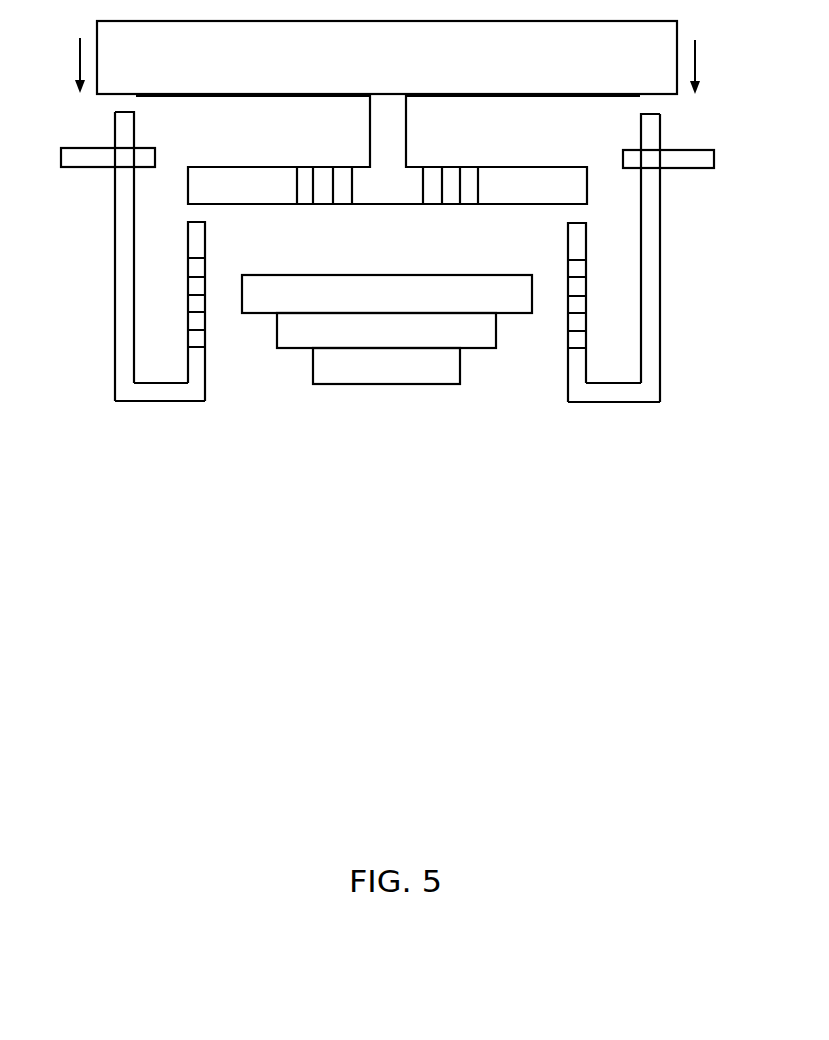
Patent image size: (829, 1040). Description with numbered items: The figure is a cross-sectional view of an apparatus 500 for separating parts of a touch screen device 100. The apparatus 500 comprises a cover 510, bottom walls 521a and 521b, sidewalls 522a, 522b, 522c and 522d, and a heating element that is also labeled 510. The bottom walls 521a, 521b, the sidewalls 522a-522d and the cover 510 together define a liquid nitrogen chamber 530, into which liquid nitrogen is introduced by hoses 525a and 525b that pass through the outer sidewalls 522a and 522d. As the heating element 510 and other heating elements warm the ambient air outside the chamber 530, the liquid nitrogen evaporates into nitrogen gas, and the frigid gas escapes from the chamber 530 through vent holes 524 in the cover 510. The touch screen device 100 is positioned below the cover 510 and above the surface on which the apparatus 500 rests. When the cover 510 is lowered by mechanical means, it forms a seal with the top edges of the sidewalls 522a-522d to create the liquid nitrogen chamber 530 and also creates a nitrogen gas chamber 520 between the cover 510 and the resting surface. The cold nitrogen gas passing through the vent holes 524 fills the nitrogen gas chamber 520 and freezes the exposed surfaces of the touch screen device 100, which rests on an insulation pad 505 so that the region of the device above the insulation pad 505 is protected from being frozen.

The apparatus 500 is at (175, 592).
The cover 510 is at (387, 202).
The liquid nitrogen chamber 530 is at (388, 150).
The vent holes 524 is at (297, 192).
The nitrogen gas chamber 520 is at (387, 235).
The touch screen device 100 is at (387, 294).
The insulation pad 505 is at (386, 330).
The hose 525a is at (85, 167).
The hose 525b is at (687, 169).
The sidewall 522a is at (114, 363).
The sidewall 522b is at (206, 382).
The sidewall 522c is at (567, 383).
The sidewall 522d is at (660, 300).
The bottom wall 521a is at (133, 402).
The bottom wall 521b is at (595, 402).